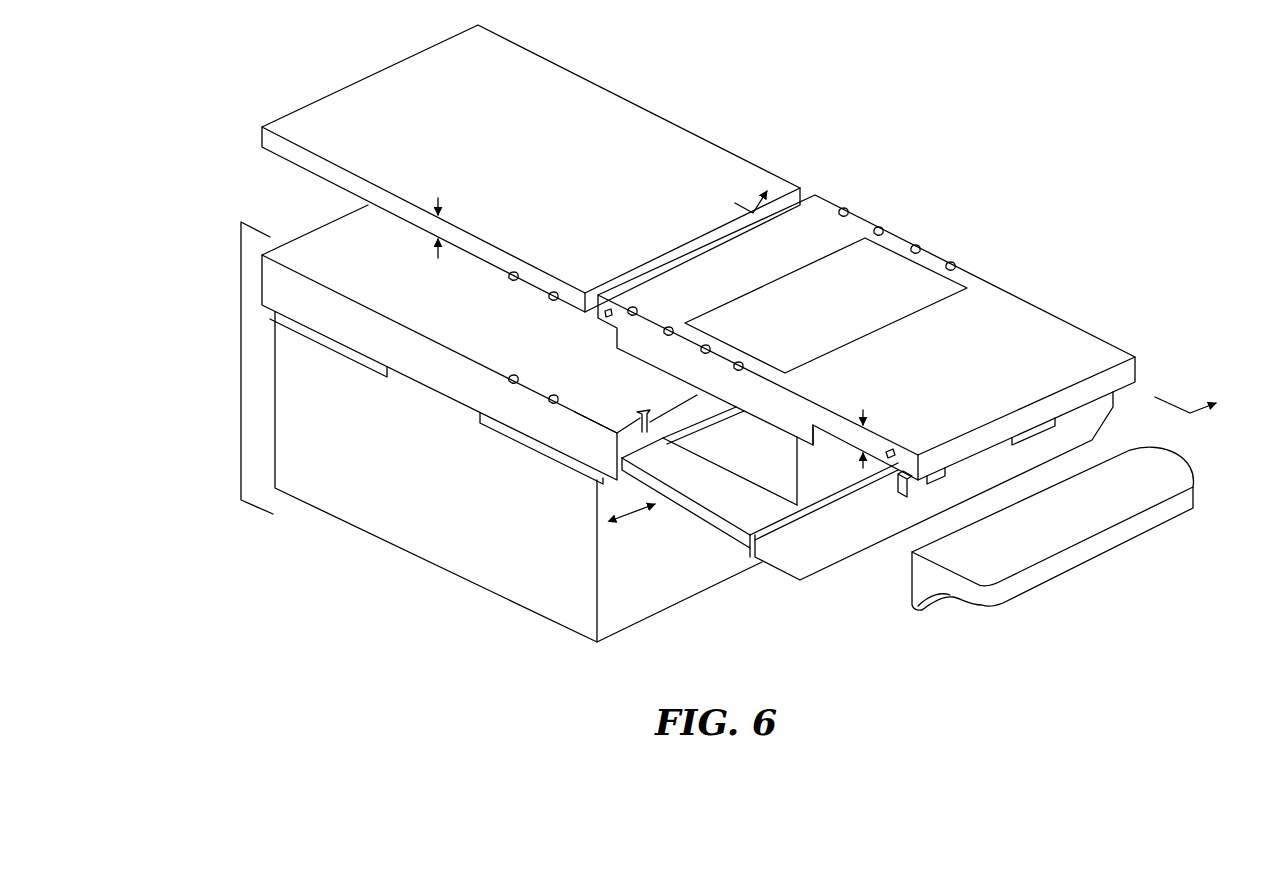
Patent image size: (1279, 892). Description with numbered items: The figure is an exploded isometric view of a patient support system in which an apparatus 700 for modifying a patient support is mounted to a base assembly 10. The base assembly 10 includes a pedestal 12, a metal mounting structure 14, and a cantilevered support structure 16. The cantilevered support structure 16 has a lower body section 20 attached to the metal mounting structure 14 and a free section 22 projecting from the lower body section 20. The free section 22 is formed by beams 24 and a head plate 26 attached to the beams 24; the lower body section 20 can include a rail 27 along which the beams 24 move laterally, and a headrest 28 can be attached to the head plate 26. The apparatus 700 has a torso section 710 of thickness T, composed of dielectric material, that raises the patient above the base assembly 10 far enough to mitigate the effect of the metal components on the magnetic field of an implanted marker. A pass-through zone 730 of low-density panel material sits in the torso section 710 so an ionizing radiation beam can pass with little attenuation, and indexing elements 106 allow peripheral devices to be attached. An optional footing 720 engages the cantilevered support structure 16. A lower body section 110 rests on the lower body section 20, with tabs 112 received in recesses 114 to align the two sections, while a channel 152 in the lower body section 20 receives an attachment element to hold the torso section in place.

The base assembly 10 is at (241, 375).
The pedestal 12 is at (516, 484).
The metal mounting structure 14 is at (368, 366).
The cantilevered support structure 16 is at (596, 444).
The lower body section 20 is at (489, 364).
The free section 22 is at (864, 495).
The beams 24 is at (725, 497).
The head plate 26 is at (820, 548).
The rail 27 is at (737, 417).
The headrest 28 is at (1113, 517).
The indexing elements 106 is at (622, 309).
The lower body section 110 is at (597, 101).
The tabs 112 is at (509, 278).
The recesses 114 is at (514, 380).
The channel 152 is at (656, 423).
The apparatus 700 is at (920, 340).
The torso section 710 is at (1090, 348).
The footing 720 is at (823, 433).
The pass-through zone 730 is at (950, 290).